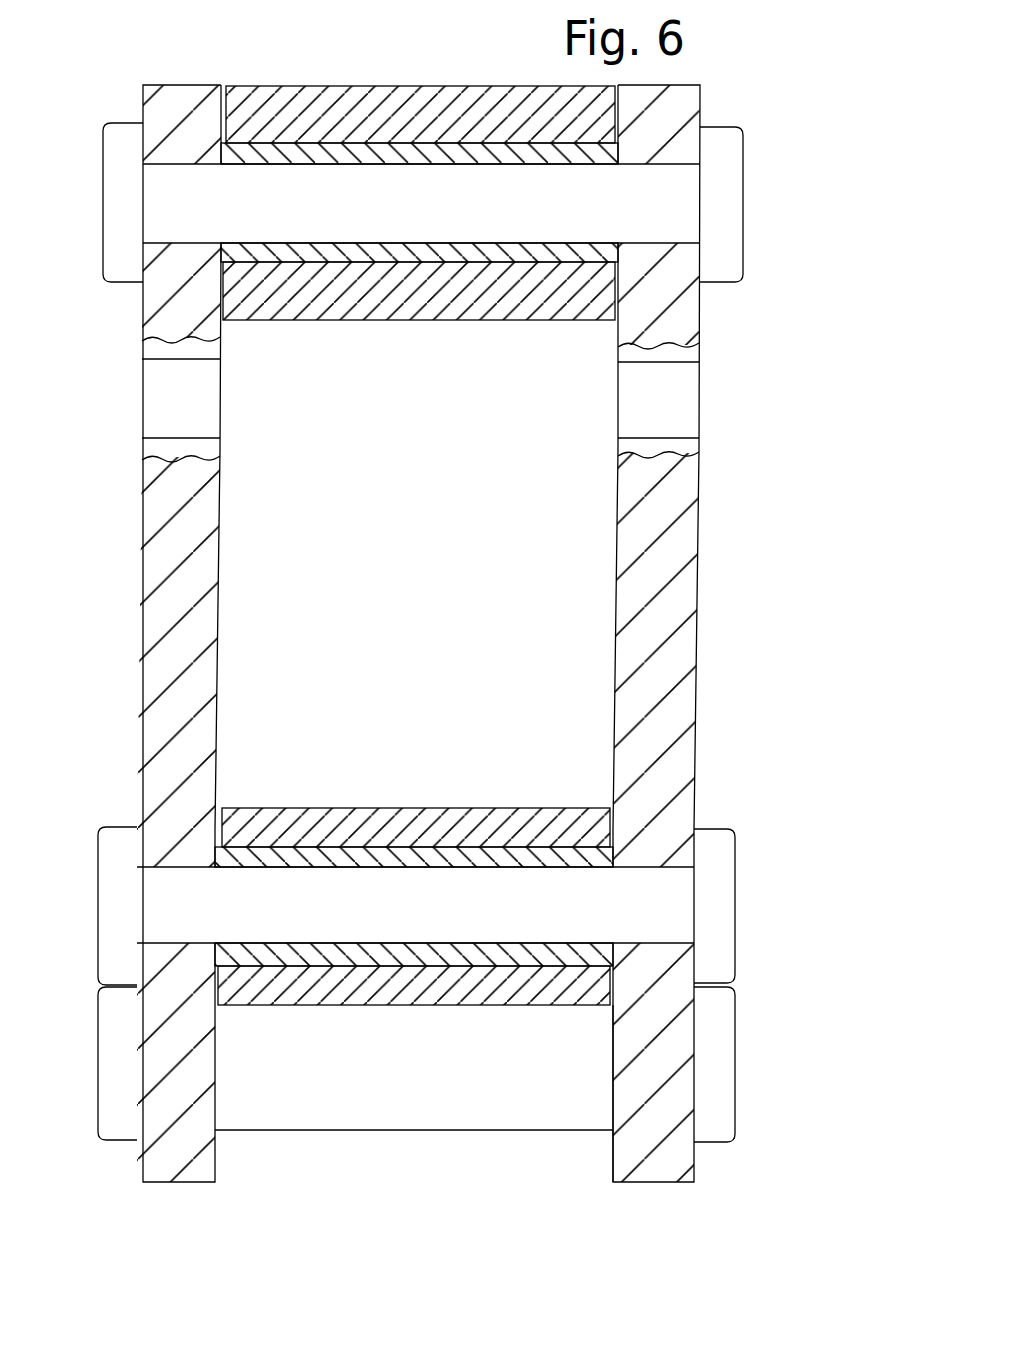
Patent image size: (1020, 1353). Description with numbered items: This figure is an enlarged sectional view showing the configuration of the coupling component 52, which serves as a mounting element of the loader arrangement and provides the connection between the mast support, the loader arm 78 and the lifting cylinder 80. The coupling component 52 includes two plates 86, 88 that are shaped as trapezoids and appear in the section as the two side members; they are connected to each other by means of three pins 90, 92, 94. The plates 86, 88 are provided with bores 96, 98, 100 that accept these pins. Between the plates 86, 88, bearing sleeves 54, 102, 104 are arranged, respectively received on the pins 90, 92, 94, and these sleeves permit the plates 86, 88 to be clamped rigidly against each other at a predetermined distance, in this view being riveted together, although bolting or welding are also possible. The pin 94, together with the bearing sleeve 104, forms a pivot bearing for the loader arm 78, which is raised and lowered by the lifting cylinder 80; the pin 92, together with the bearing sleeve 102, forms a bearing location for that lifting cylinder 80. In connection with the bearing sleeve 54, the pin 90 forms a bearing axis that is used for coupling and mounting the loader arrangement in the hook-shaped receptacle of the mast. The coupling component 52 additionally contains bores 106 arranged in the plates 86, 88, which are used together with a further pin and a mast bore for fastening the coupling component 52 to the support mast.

The coupling component 52 is at (796, 455).
The bearing sleeve 54 is at (448, 1082).
The loader arm 78 is at (423, 92).
The lifting cylinder 80 is at (264, 830).
The plate 86 is at (167, 488).
The plate 88 is at (675, 605).
The pin 90 is at (113, 1055).
The pin 92 is at (178, 903).
The pin 94 is at (166, 206).
The bore 96 is at (182, 863).
The bore 98 is at (180, 160).
The bore 100 is at (613, 1082).
The bearing sleeve 102 is at (355, 860).
The bearing sleeve 104 is at (288, 150).
The bore 106 is at (170, 397).